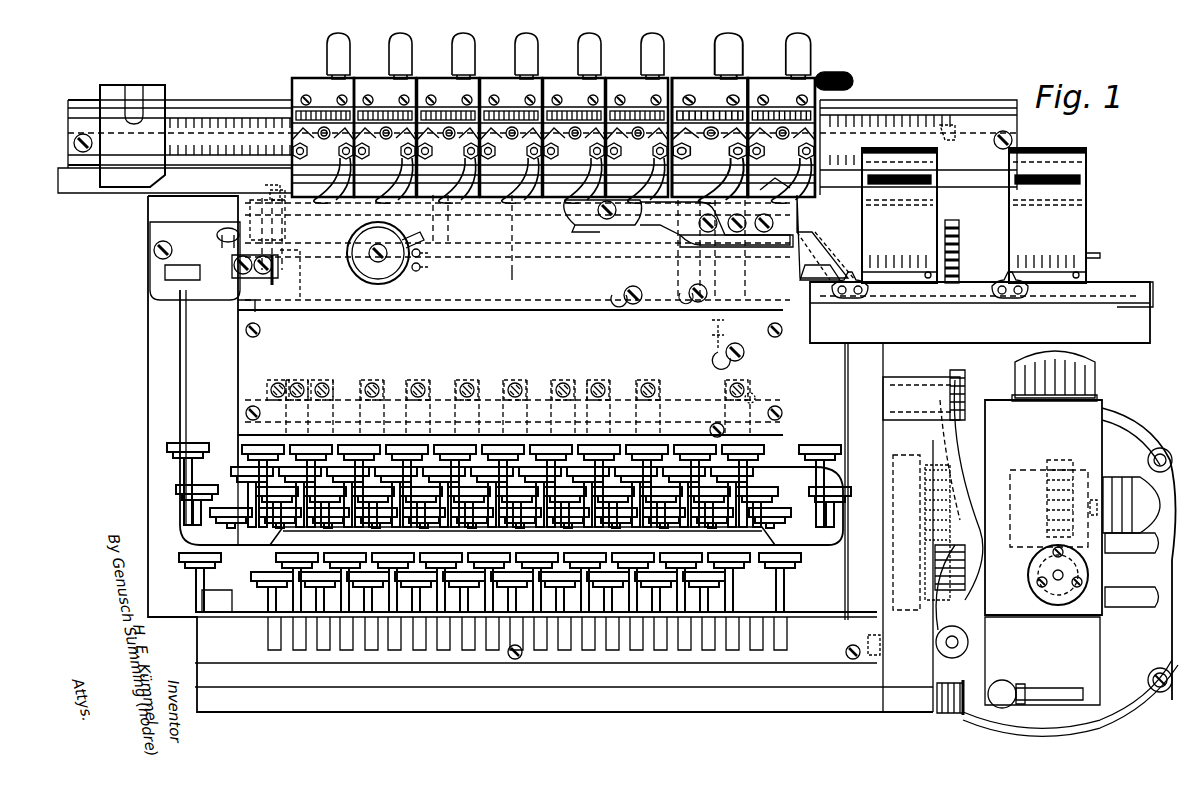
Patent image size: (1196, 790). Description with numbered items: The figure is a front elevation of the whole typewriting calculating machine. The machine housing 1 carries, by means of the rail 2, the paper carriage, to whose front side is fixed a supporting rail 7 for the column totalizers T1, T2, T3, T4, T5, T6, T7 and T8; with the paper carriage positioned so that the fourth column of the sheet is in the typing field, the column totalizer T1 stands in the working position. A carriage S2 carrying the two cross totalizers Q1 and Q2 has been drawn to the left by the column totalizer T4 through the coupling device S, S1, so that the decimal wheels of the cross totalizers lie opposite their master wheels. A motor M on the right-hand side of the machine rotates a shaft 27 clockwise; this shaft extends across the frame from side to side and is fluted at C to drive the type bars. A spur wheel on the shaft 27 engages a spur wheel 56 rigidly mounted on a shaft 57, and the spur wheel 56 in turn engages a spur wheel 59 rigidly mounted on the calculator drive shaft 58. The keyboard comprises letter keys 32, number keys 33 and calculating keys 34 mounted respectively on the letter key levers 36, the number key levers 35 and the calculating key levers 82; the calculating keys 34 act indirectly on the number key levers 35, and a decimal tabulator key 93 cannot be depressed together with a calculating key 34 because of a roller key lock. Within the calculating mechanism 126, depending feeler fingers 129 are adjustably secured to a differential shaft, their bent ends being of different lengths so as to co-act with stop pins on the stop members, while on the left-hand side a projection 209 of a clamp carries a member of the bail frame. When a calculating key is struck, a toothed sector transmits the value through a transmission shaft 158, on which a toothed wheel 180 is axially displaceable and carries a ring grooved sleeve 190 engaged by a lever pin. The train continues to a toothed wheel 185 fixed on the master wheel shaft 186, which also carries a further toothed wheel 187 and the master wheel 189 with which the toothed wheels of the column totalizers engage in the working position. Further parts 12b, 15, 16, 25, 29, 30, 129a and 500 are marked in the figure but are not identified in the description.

The machine housing 1 is at (157, 340).
The rail 2 is at (88, 190).
The supporting rail 7 is at (872, 112).
The stop 12b is at (950, 140).
The lever 15 is at (770, 190).
The bar 16 is at (690, 210).
The rack 25 is at (958, 375).
The shaft 27 is at (1094, 500).
The gear 29 is at (1040, 575).
The spring 30 is at (1058, 458).
The letter keys 32 is at (275, 465).
The number keys 33 is at (535, 452).
The calculating keys 34 is at (432, 592).
The number key levers 35 is at (455, 447).
The letter key levers 36 is at (630, 468).
The spur wheel 56 is at (920, 600).
The shaft 57 is at (915, 578).
The calculator drive shaft 58 is at (862, 660).
The spur wheel 59 is at (906, 668).
The calculating key levers 82 is at (625, 582).
The decimal tabulator key 93 is at (548, 582).
The calculating mechanism 126 is at (258, 300).
The feeler fingers 129 is at (322, 380).
The slot 129a is at (738, 382).
The transmission shaft 158 is at (339, 255).
The toothed wheel 180 is at (285, 265).
The toothed wheel 185 is at (270, 190).
The master wheel shaft 186 is at (282, 271).
The toothed wheel 187 is at (277, 195).
The master wheel 189 is at (518, 280).
The ring grooved sleeve 190 is at (252, 224).
The projection 209 is at (280, 378).
The plate 500 is at (1088, 255).
The fluted portion C is at (905, 505).
The motor M is at (1128, 440).
The cross totalizer Q1 is at (912, 214).
The cross totalizer Q2 is at (1078, 206).
The coupling device S is at (580, 182).
The coupling device part S1 is at (572, 220).
The carriage S2 is at (806, 300).
The column totalizer T1 is at (310, 86).
The column totalizer T2 is at (374, 86).
The column totalizer T3 is at (438, 86).
The column totalizer T4 is at (512, 86).
The column totalizer T5 is at (572, 86).
The column totalizer T6 is at (630, 86).
The column totalizer T7 is at (708, 88).
The column totalizer T8 is at (776, 88).